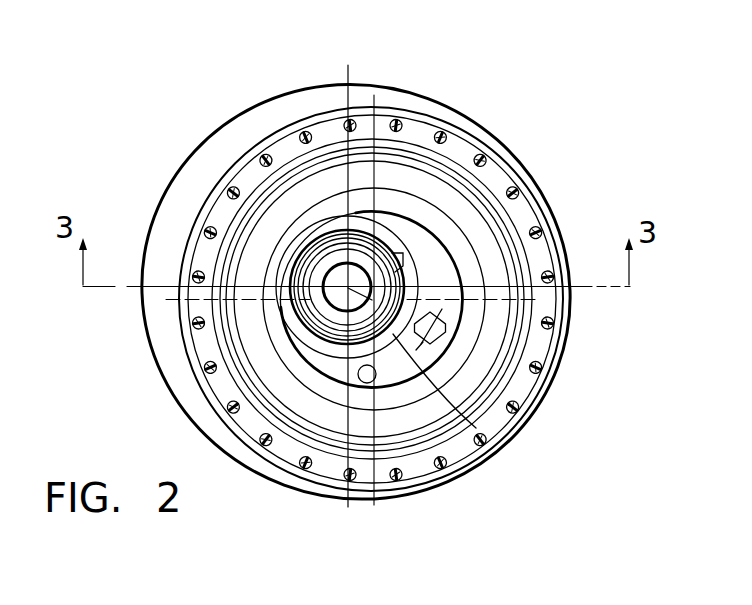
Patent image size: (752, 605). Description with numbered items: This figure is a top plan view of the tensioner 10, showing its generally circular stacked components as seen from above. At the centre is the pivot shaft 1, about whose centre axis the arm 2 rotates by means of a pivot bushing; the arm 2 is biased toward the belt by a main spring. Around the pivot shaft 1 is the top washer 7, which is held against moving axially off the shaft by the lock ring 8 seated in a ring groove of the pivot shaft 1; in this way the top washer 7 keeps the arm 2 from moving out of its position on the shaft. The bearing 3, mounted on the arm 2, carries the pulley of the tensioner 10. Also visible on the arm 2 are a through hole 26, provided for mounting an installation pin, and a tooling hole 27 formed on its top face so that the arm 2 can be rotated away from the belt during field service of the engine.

The tensioner 10 is at (158, 88).
The arm 2 is at (195, 183).
The pivot shaft 1 is at (336, 262).
The bearing 3 is at (456, 200).
The top washer 7 is at (453, 314).
The lock ring 8 is at (405, 264).
The through hole 26 is at (368, 382).
The tooling hole 27 is at (444, 330).